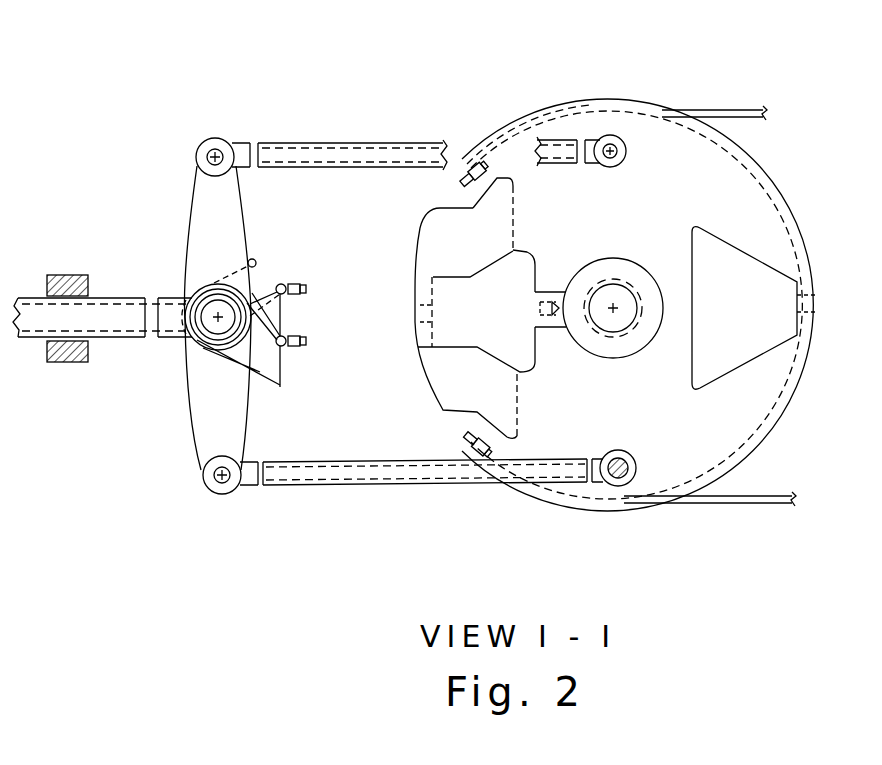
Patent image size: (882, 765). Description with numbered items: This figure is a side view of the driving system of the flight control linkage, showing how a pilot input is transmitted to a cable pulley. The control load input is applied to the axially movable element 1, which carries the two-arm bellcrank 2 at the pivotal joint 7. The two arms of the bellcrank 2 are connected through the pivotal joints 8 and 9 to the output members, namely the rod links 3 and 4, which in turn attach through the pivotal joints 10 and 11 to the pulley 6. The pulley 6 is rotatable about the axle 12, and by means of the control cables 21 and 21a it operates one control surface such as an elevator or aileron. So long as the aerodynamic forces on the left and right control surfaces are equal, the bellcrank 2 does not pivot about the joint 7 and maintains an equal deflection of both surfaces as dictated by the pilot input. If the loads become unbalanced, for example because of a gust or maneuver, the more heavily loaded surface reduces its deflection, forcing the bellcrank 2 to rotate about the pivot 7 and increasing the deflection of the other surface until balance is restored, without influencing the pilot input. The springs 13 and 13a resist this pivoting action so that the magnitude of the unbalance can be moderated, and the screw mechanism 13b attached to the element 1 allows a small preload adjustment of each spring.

The axially movable element 1 is at (115, 315).
The two-arm bellcrank 2 is at (205, 205).
The rod link 3 is at (285, 152).
The rod link 4 is at (293, 480).
The pulley 6 is at (750, 193).
The pivotal joint 7 is at (206, 327).
The pivotal joint 8 is at (210, 157).
The pivotal joint 9 is at (220, 478).
The pivotal joint 10 is at (612, 148).
The pivotal joint 11 is at (618, 477).
The axle 12 is at (620, 322).
The spring 13 is at (254, 262).
The spring 13a is at (261, 356).
The screw mechanism 13b is at (302, 343).
The control cable 21 is at (733, 112).
The control cable 21a is at (757, 500).